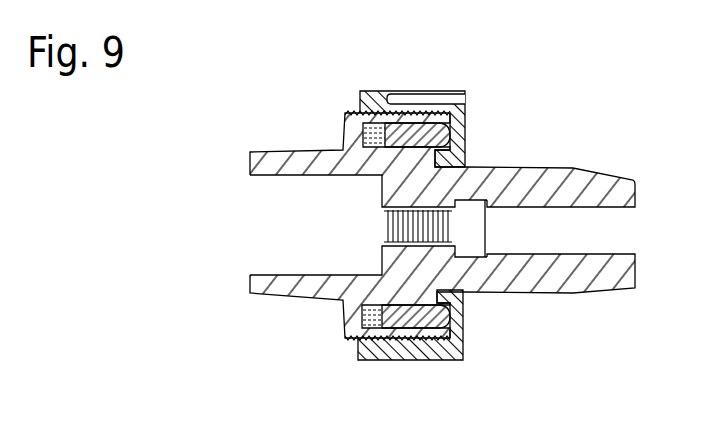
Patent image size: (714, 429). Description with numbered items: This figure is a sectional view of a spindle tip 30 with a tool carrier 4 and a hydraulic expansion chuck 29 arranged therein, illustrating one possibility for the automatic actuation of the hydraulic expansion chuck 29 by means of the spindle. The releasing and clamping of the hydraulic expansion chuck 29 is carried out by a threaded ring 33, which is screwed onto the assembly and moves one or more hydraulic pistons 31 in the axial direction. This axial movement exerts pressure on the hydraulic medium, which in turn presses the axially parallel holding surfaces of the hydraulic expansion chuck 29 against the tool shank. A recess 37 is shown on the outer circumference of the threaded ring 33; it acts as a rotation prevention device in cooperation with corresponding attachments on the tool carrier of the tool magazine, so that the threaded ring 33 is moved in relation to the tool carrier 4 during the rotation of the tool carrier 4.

The tool carrier 4 is at (592, 270).
The hydraulic expansion chuck 29 is at (435, 254).
The spindle tip 30 is at (308, 162).
The hydraulic piston 31 is at (465, 120).
The threaded ring 33 is at (465, 142).
The recess 37 is at (428, 98).